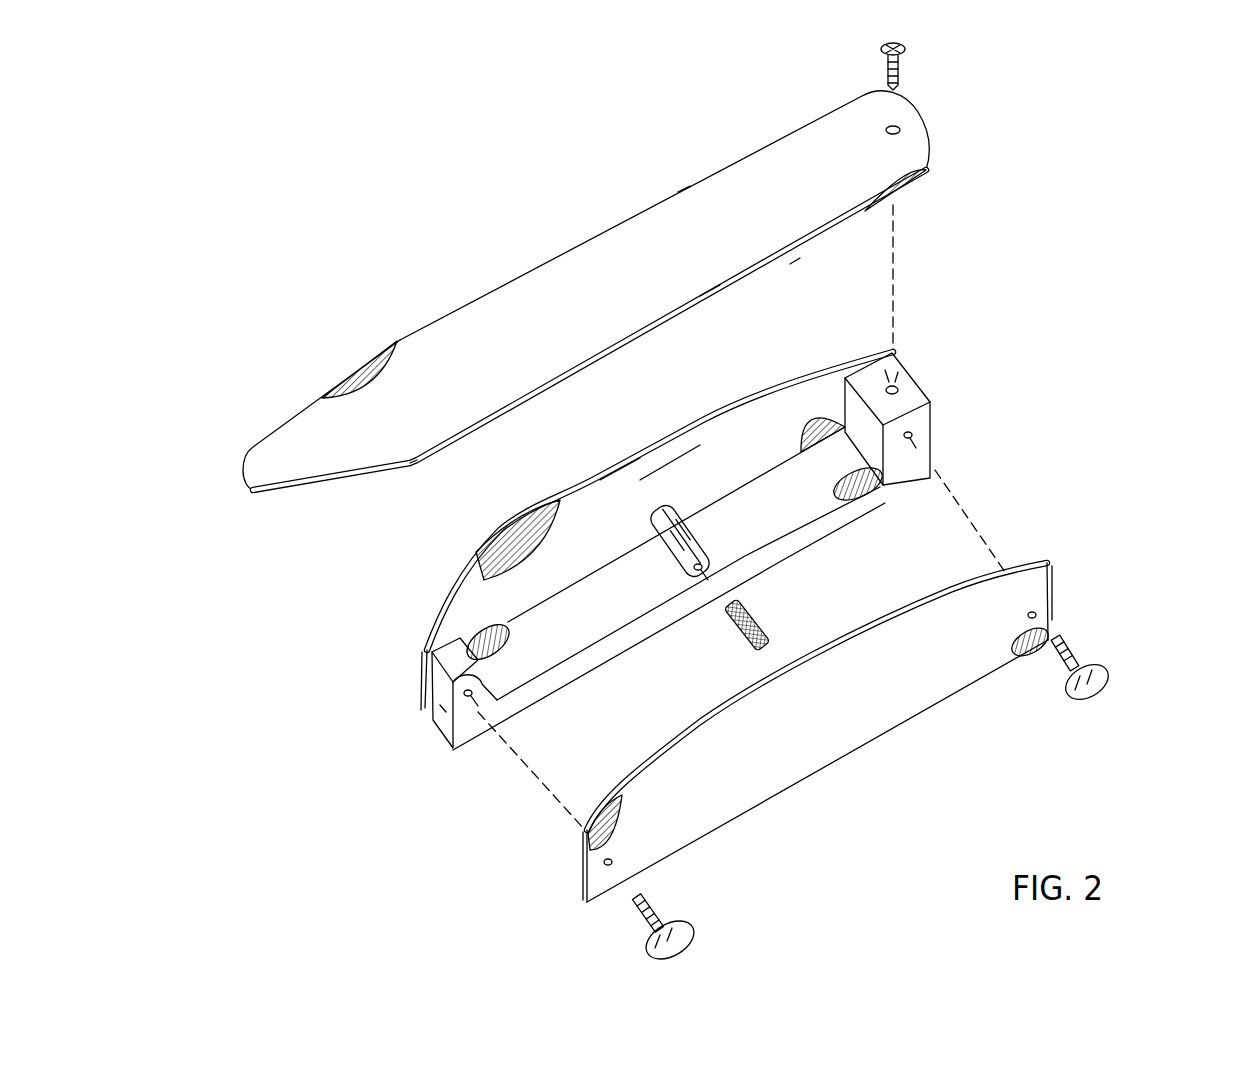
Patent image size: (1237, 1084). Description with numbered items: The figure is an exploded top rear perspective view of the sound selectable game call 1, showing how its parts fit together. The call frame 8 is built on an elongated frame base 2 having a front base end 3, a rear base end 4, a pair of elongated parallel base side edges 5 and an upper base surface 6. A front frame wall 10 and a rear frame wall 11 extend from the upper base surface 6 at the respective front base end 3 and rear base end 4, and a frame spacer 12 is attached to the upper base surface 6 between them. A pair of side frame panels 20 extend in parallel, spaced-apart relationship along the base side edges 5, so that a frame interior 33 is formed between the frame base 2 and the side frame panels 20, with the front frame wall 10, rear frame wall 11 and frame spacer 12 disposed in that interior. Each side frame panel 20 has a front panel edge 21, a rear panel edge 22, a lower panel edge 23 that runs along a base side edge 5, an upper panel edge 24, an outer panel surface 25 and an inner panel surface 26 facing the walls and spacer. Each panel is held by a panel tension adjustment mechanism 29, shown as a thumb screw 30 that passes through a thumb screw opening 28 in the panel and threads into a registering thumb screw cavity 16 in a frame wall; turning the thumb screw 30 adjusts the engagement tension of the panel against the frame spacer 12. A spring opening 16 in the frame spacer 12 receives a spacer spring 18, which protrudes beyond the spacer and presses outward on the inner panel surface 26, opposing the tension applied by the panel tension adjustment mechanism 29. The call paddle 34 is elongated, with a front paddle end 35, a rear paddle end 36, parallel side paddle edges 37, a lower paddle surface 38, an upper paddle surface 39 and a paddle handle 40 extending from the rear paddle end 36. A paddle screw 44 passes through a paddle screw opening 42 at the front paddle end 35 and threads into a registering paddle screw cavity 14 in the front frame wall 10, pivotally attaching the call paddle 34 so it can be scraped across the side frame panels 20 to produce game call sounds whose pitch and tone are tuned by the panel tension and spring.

The sound selectable game call 1 is at (362, 168).
The frame base 2 is at (437, 738).
The front base end 3 is at (862, 430).
The rear base end 4 is at (462, 642).
The base side edges 5 is at (622, 555).
The upper base surface 6 is at (760, 520).
The call frame 8 is at (392, 612).
The front frame wall 10 is at (935, 410).
The rear frame wall 11 is at (462, 748).
The frame spacer 12 is at (697, 510).
The paddle screw cavity 14 is at (895, 386).
The thumb screw cavity 16 is at (908, 437).
The spacer spring 18 is at (733, 642).
The side frame panels 20 is at (480, 543).
The front panel edge 21 is at (1057, 590).
The rear panel edge 22 is at (420, 698).
The lower panel edge 23 is at (770, 805).
The upper panel edge 24 is at (800, 352).
The outer panel surface 25 is at (705, 418).
The inner panel surface 26 is at (905, 600).
The thumb screw opening 28 is at (1030, 615).
The panel tension adjustment mechanism 29 is at (1113, 672).
The thumb screw 30 is at (1118, 682).
The frame interior 33 is at (650, 470).
The call paddle 34 is at (505, 280).
The front paddle end 35 is at (930, 128).
The rear paddle end 36 is at (418, 470).
The side paddle edges 37 is at (615, 225).
The lower paddle surface 38 is at (797, 262).
The upper paddle surface 39 is at (690, 200).
The paddle handle 40 is at (243, 482).
The paddle screw opening 42 is at (900, 128).
The paddle screw 44 is at (912, 50).